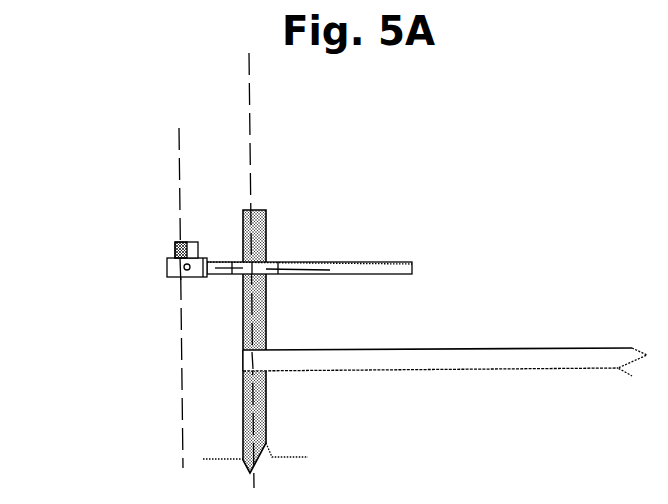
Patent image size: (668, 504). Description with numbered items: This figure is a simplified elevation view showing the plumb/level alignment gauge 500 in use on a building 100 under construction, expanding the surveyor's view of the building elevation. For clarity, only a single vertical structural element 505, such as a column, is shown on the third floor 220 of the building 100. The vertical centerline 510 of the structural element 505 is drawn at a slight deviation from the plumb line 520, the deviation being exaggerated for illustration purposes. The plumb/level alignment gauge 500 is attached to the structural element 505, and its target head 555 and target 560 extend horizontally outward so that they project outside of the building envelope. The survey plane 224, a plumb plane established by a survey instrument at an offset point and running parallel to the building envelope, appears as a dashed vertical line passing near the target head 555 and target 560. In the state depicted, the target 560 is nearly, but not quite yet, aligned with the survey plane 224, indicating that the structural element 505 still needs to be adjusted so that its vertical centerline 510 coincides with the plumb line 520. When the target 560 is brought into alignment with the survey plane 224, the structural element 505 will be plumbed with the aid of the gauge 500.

The building 100 is at (351, 297).
The third floor 220 is at (445, 324).
The survey plane 224 is at (132, 298).
The plumb/level alignment gauge 500 is at (367, 227).
The vertical structural element 505 is at (280, 341).
The vertical centerline 510 is at (329, 165).
The plumb line 520 is at (198, 270).
The target head 555 is at (131, 239).
The target 560 is at (145, 206).